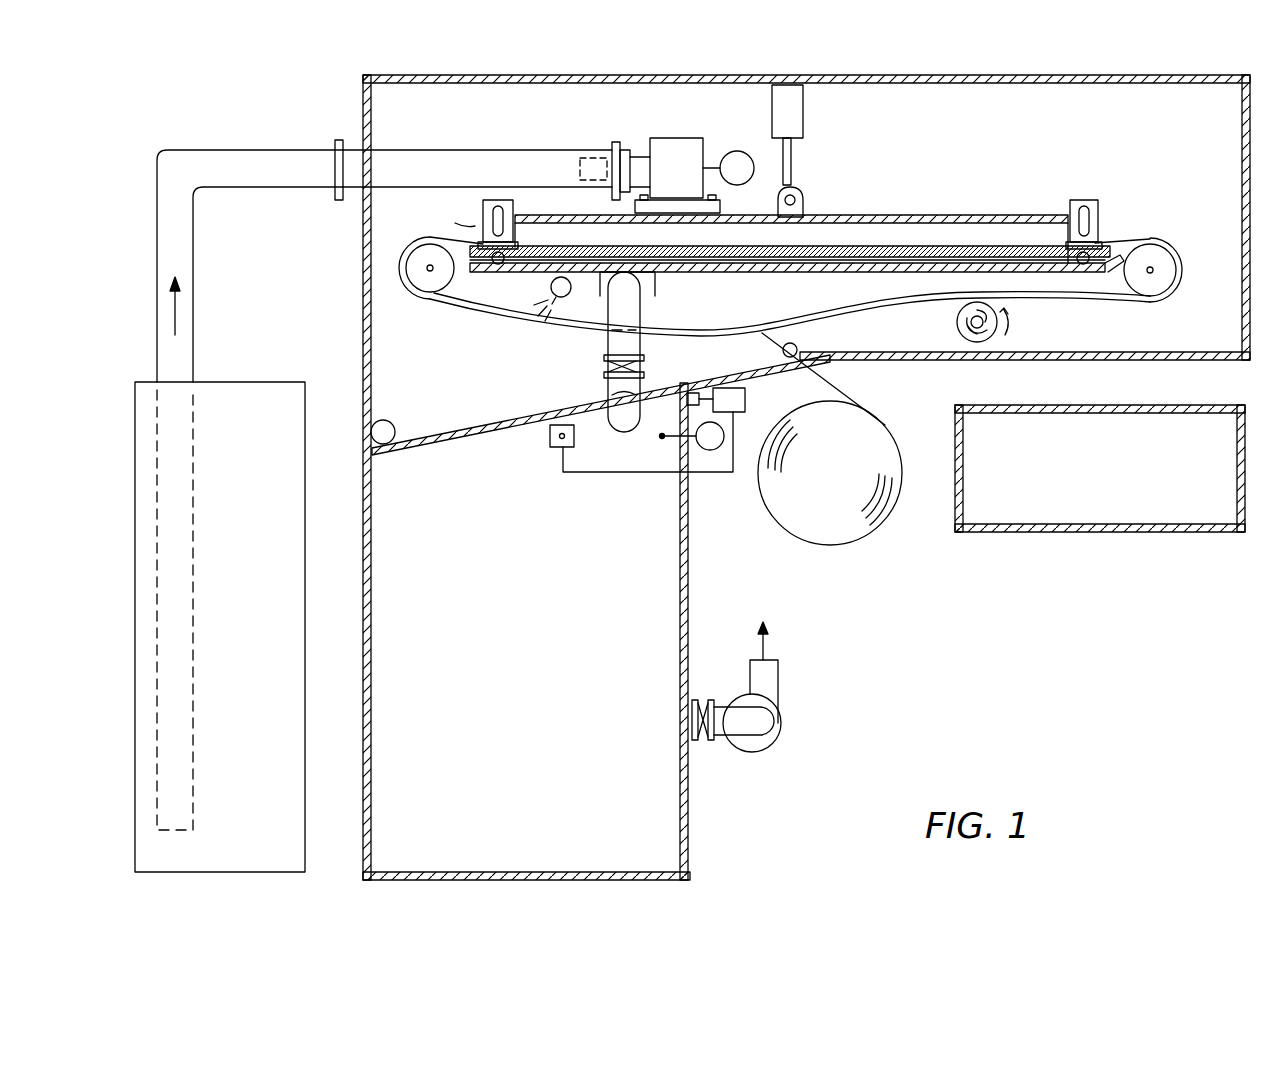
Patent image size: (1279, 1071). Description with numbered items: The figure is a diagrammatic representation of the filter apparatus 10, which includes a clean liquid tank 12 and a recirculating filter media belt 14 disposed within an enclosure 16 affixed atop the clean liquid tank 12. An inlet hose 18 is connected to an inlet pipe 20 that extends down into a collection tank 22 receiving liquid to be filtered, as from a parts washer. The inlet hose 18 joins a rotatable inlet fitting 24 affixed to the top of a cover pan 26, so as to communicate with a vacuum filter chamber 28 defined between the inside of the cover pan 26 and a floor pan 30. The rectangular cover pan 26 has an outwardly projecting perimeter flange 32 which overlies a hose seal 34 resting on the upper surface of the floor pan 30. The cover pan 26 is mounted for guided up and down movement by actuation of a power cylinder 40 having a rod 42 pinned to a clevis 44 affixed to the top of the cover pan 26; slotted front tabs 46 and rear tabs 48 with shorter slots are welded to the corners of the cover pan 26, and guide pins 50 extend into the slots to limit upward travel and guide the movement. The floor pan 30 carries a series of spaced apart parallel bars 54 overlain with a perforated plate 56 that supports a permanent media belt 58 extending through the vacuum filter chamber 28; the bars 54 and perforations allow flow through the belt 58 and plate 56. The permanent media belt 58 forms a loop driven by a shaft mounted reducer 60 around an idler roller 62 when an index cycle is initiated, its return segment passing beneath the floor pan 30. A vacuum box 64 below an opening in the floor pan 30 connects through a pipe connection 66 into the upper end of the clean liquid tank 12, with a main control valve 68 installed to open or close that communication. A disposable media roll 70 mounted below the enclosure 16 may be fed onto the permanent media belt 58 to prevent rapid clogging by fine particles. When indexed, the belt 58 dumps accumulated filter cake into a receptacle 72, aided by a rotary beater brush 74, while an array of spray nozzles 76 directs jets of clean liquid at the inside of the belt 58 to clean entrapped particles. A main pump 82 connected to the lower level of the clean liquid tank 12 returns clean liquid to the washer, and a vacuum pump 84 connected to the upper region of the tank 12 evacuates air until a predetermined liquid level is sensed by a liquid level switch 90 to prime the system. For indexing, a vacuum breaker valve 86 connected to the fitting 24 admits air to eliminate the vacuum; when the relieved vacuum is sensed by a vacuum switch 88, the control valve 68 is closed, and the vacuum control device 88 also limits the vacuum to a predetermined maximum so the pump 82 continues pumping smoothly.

The system 10 is at (235, 143).
The clean liquid tank 12 is at (690, 584).
The recirculating filter media belt 14 is at (972, 212).
The enclosure 16 is at (1250, 122).
The inlet hose 18 is at (400, 150).
The inlet pipe 20 is at (195, 326).
The collection tank 22 is at (325, 372).
The rotatable inlet fitting 24 is at (690, 138).
The cover pan 26 is at (915, 218).
The vacuum filter chamber 28 is at (1020, 232).
The floor pan 30 is at (822, 280).
The perimeter flange 32 is at (445, 216).
The hose seal 34 is at (440, 302).
The power cylinder 40 is at (805, 112).
The rod 42 is at (795, 165).
The clevis 44 is at (778, 210).
The slotted front tabs 46 is at (483, 225).
The rear tabs 48 is at (1097, 224).
The guide pins 50 is at (500, 200).
The parallel bars 54 is at (985, 262).
The perforated plate 56 is at (950, 250).
The permanent media belt 58 is at (472, 318).
The shaft mounted reducer 60 is at (1150, 250).
The idler roller 62 is at (412, 283).
The vacuum box 64 is at (658, 284).
The pipe connection 66 is at (645, 312).
The main control valve 68 is at (610, 365).
The disposable media roll 70 is at (846, 489).
The receptacle 72 is at (1010, 535).
The rotary beater brush 74 is at (955, 322).
The spray nozzles 76 is at (570, 292).
The main pump 82 is at (778, 703).
The vacuum pump 84 is at (748, 394).
The vacuum breaker valve 86 is at (752, 140).
The vacuum switch 88 is at (400, 420).
The liquid level switch 90 is at (552, 447).